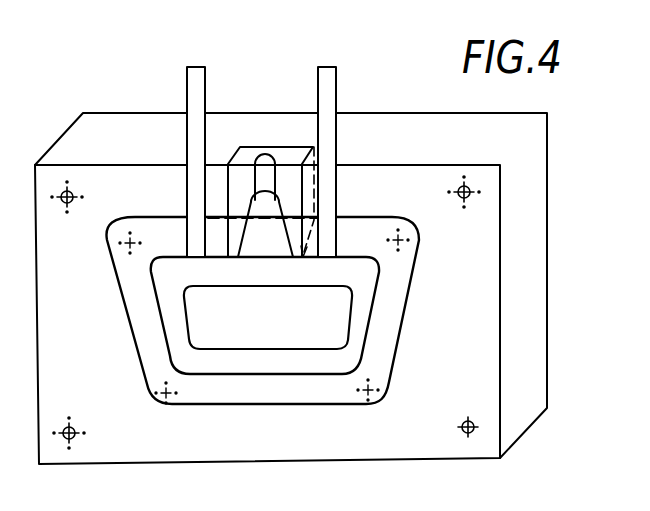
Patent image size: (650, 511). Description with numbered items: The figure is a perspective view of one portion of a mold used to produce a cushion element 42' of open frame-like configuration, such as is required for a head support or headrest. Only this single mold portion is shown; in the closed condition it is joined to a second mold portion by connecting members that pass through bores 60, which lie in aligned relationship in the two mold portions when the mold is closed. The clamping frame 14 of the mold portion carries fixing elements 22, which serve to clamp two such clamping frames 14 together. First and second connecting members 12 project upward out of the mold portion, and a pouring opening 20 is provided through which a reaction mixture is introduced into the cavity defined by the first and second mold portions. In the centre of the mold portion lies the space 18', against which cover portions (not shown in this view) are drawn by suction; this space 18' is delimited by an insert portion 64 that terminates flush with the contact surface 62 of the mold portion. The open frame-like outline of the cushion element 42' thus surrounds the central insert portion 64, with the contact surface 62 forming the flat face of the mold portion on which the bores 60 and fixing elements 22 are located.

The first and second connecting members 12 is at (196, 93).
The clamping frame 14 is at (397, 305).
The space in the mold 18' is at (243, 310).
The pouring opening 20 is at (262, 207).
The fixing elements 22 is at (127, 256).
The cushion element 42' is at (265, 354).
The bores 60 is at (77, 193).
The contact surface 62 is at (474, 358).
The insert portion 64 is at (280, 316).